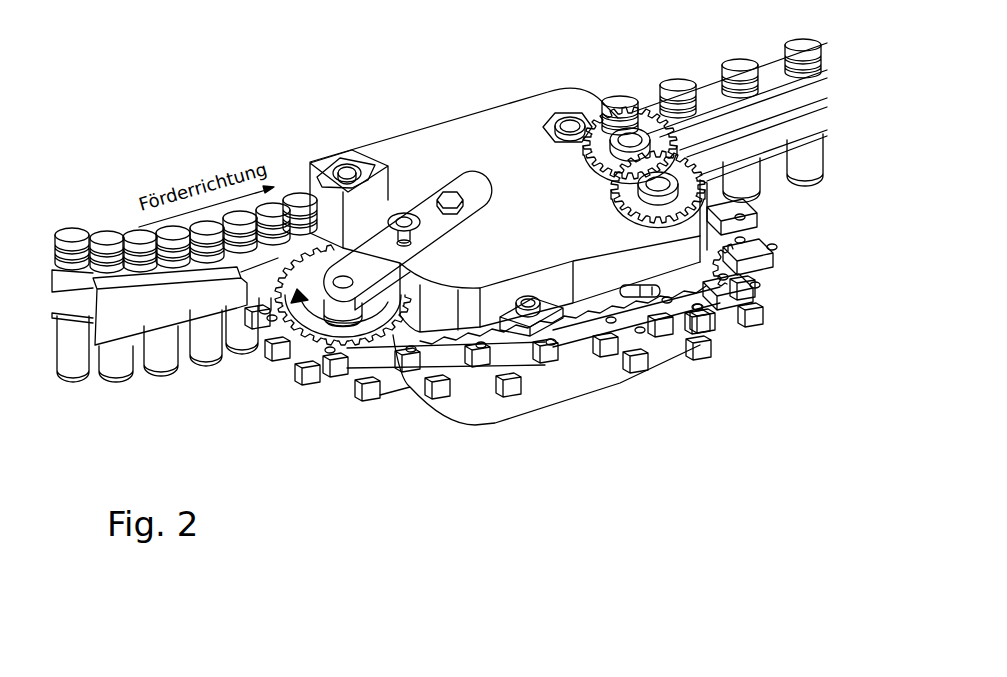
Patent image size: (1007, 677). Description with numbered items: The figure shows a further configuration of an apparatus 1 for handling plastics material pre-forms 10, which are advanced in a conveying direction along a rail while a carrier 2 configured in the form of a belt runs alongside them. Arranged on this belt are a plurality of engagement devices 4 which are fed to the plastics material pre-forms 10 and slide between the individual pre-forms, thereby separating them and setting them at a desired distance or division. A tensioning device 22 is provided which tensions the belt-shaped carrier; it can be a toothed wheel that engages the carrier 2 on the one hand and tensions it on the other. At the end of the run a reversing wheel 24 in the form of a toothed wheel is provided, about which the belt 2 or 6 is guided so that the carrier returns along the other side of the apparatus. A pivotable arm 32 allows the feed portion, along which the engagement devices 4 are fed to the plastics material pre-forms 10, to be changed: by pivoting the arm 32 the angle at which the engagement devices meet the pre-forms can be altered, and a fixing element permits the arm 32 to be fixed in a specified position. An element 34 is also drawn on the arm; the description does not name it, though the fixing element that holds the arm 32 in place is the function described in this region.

The apparatus 1 is at (399, 503).
The carrier 2 is at (517, 354).
The engagement devices 4 is at (370, 382).
The belt 6 is at (465, 385).
The plastics material pre-forms 10 is at (155, 360).
The tensioning device 22 is at (543, 320).
The reversing wheel 24 is at (704, 262).
The pivotable arm 32 is at (372, 262).
The adjusting lever 34 is at (406, 213).